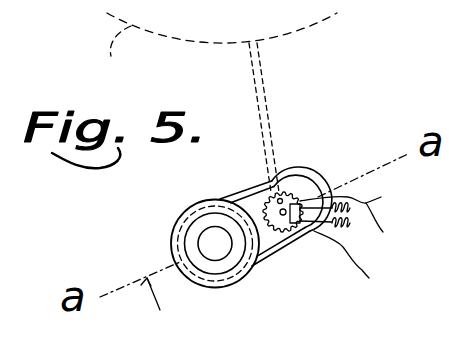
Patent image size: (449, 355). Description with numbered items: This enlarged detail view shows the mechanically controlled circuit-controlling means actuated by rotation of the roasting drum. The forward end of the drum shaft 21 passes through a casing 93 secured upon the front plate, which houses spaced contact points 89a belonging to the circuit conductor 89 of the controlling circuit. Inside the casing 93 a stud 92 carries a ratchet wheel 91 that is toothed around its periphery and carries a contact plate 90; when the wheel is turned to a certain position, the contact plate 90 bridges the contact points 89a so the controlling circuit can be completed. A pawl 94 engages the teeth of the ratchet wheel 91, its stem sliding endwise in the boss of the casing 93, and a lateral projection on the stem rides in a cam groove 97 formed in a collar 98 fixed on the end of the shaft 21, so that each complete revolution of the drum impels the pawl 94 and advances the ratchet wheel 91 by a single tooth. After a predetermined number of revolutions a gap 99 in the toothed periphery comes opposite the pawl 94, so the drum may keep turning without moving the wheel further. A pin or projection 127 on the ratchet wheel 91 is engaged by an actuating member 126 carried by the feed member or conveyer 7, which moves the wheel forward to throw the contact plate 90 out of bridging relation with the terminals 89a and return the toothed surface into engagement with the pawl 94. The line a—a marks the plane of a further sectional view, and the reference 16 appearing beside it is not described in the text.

The feed member or conveyer 7 is at (222, 44).
The direction arrow 16 is at (138, 311).
The shaft 21 is at (208, 243).
The circuit conductor 89 is at (350, 224).
The spaced contact points 89a is at (371, 235).
The contact plate 90 is at (294, 230).
The ratchet wheel 91 is at (300, 195).
The stud 92 is at (280, 228).
The casing 93 is at (281, 198).
The pawl 94 is at (245, 192).
The cam groove 97 is at (200, 282).
The collar 98 is at (185, 210).
The gap in toothed periphery 99 is at (268, 198).
The actuating member or projection 126 is at (259, 82).
The pin or projection 127 is at (286, 207).